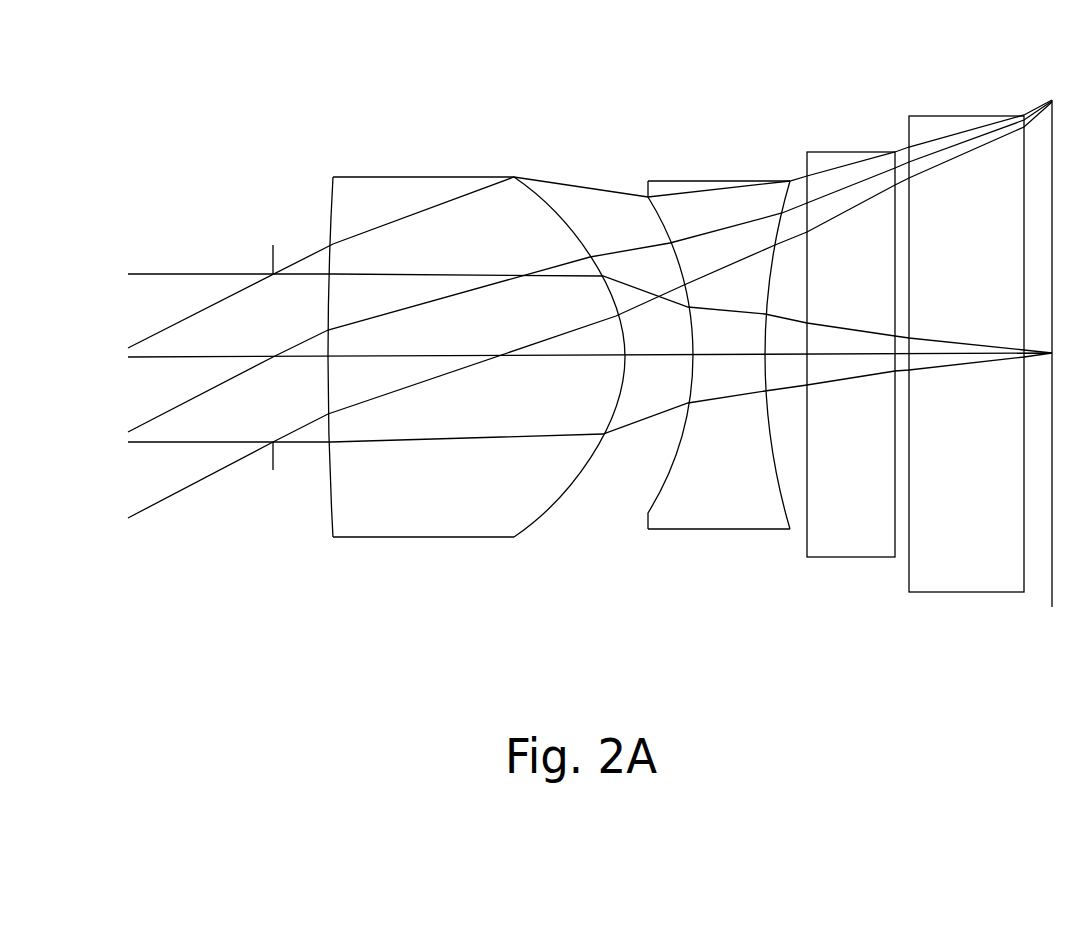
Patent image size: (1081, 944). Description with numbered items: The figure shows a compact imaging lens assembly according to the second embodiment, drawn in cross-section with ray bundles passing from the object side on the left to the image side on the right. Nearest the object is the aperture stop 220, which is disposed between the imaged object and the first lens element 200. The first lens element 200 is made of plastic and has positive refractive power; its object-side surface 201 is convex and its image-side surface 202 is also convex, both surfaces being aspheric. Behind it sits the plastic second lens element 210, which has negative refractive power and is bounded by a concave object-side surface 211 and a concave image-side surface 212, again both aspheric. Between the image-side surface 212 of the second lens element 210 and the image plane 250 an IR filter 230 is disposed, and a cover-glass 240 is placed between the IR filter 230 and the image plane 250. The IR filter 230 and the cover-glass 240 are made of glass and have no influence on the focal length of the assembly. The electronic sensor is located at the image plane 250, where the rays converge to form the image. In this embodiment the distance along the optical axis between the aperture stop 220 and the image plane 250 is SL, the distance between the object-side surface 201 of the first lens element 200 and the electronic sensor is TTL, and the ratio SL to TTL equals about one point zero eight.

The first lens element 200 is at (414, 363).
The object-side surface of the first lens element 201 is at (325, 380).
The image-side surface of the first lens element 202 is at (617, 385).
The second lens element 210 is at (685, 339).
The object-side surface of the second lens element 211 is at (687, 392).
The image-side surface of the second lens element 212 is at (760, 387).
The aperture stop 220 is at (267, 255).
The IR filter 230 is at (860, 233).
The cover-glass 240 is at (978, 190).
The image plane 250 is at (1050, 143).